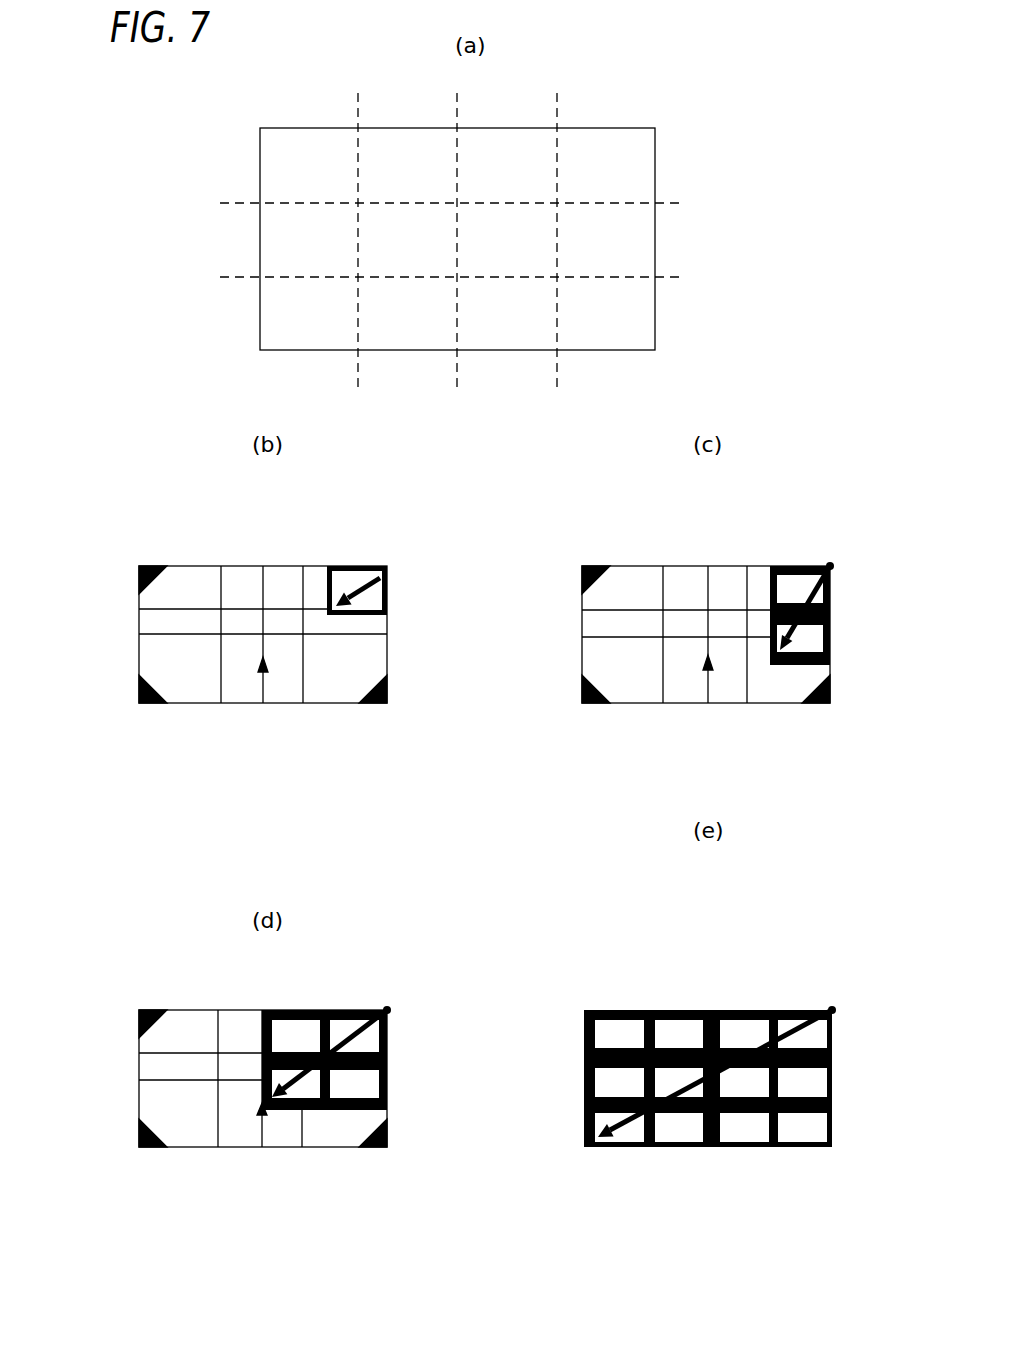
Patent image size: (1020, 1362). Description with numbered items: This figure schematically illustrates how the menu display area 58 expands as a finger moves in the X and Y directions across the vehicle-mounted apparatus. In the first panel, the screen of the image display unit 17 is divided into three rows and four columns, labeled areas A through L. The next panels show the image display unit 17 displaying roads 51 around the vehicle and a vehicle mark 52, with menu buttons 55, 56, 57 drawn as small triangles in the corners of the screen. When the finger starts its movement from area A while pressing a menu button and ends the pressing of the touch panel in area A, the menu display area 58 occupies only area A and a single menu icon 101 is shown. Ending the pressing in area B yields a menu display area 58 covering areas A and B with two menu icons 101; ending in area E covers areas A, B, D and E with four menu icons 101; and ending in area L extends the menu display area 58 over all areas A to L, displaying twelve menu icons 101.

The image display unit 17 is at (655, 128).
The roads 51 is at (160, 608).
The vehicle mark 52 is at (268, 668).
The menu button 55 is at (387, 692).
The menu button 56 is at (139, 577).
The menu button 57 is at (139, 692).
The menu display area 58 is at (343, 566).
The menu icons 101 is at (662, 1038).